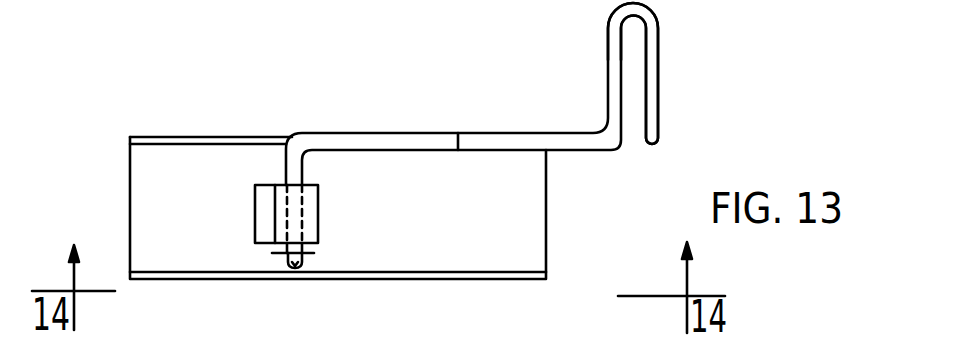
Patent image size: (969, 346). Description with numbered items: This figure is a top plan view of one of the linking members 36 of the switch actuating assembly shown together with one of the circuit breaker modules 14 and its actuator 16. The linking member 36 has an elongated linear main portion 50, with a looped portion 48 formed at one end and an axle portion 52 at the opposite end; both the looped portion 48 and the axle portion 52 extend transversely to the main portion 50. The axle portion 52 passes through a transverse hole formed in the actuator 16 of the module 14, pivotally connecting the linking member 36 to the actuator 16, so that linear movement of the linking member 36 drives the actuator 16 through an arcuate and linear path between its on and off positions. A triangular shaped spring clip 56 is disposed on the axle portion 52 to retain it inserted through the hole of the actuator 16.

The circuit breaker module 14 is at (485, 281).
The actuator 16 is at (312, 225).
The linking member 36 is at (382, 121).
The looped portion 48 is at (661, 100).
The main portion 50 is at (508, 133).
The axle portion 52 is at (297, 269).
The spring clip 56 is at (277, 255).